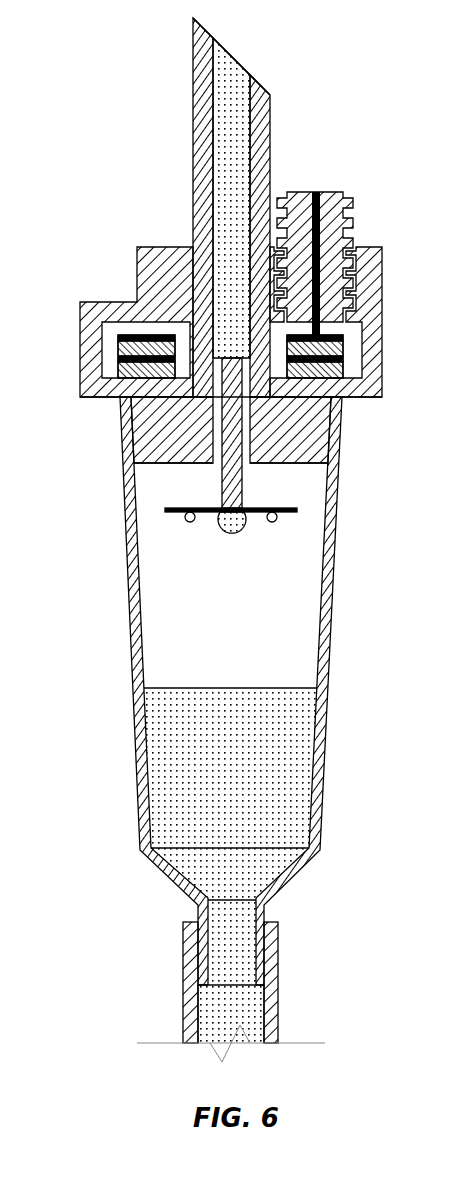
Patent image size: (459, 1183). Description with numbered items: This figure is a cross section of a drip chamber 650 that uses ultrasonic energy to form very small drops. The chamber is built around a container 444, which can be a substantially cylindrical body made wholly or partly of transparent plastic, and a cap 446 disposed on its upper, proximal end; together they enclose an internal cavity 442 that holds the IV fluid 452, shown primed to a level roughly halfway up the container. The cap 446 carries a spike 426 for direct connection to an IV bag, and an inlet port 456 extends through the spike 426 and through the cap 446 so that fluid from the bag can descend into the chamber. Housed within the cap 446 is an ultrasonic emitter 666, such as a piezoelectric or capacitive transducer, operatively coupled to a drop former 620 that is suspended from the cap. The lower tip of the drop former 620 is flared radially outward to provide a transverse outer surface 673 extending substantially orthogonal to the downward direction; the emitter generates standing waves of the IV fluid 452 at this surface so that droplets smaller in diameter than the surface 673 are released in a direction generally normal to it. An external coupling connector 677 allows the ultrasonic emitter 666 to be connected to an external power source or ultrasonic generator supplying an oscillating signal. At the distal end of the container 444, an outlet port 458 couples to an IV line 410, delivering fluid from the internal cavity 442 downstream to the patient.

The drip chamber 650 is at (134, 150).
The inlet port 456 is at (249, 45).
The spike 426 is at (272, 134).
The external coupling connector 677 is at (353, 203).
The ultrasonic emitter 666 is at (287, 350).
The cap 446 is at (80, 367).
The drop former 620 is at (256, 492).
The transverse outer surface 673 is at (253, 515).
The IV fluid 452 is at (218, 527).
The internal cavity 442 is at (268, 642).
The container 444 is at (327, 718).
The outlet port 458 is at (218, 997).
The IV line 410 is at (278, 1015).